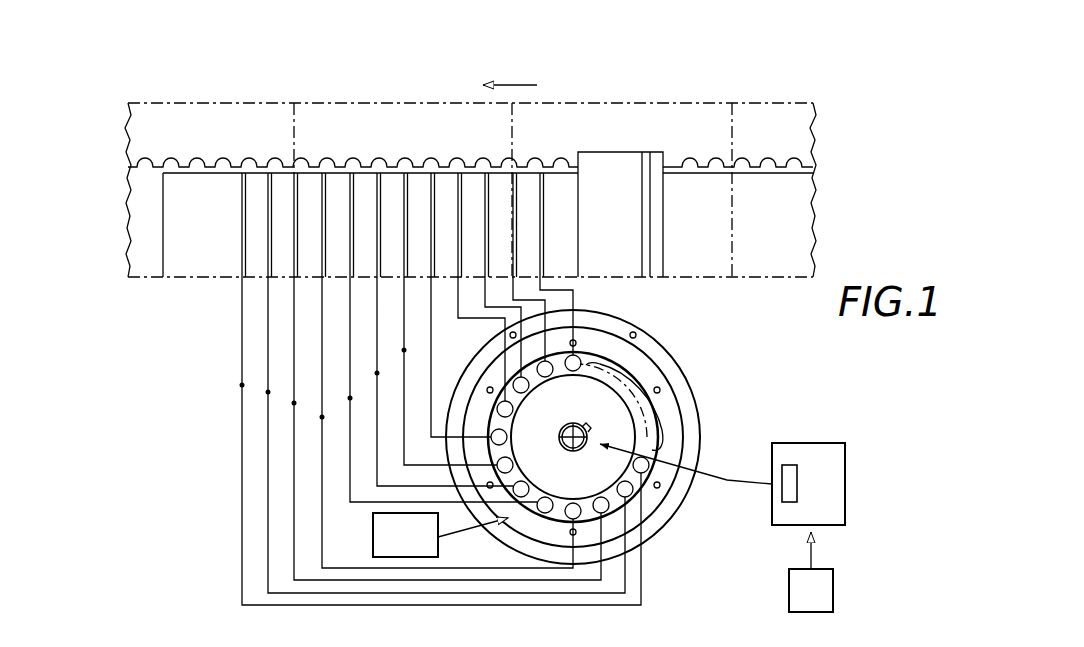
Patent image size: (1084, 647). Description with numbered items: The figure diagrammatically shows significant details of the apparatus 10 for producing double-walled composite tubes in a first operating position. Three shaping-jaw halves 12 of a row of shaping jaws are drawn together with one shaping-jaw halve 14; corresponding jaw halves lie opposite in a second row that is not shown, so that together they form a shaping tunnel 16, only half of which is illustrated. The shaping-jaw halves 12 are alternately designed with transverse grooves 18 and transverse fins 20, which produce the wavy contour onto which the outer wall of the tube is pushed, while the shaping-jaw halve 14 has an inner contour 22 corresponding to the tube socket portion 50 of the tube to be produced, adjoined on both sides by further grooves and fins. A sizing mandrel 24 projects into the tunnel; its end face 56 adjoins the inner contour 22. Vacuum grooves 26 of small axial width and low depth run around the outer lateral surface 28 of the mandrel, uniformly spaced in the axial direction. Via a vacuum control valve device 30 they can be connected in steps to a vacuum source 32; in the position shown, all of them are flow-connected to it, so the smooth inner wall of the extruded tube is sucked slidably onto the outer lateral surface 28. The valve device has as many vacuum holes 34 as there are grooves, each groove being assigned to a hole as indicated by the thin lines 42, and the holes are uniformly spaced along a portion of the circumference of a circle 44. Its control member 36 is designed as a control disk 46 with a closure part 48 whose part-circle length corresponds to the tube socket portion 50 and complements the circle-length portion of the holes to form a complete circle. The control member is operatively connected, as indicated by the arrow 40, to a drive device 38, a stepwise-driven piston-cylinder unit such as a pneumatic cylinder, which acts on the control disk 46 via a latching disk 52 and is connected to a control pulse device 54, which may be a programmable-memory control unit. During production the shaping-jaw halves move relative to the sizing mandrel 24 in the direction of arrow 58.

The apparatus 10 is at (849, 88).
The shaping-jaw halves 12 is at (207, 126).
The shaping-jaw halve 14 is at (637, 126).
The shaping tunnel 16 is at (779, 215).
The transverse grooves 18 is at (197, 157).
The transverse fins 20 is at (260, 158).
The inner contour 22 is at (597, 163).
The sizing mandrel 24 is at (186, 221).
The vacuum grooves 26 is at (350, 197).
The outer lateral surface 28 is at (190, 177).
The vacuum control valve device 30 is at (714, 372).
The vacuum source 32 is at (440, 535).
The vacuum holes 34 is at (492, 428).
The control member 36 is at (622, 428).
The drive device 38 is at (830, 441).
The arrow 40 is at (727, 481).
The thin lines 42 is at (242, 385).
The circle 44 is at (619, 379).
The control disk 46 is at (596, 415).
The closure part 48 is at (665, 437).
The tube socket portion 50 is at (609, 206).
The latching disk 52 is at (788, 507).
The control pulse device 54 is at (838, 585).
The end face 56 is at (582, 255).
The arrow 58 is at (509, 84).